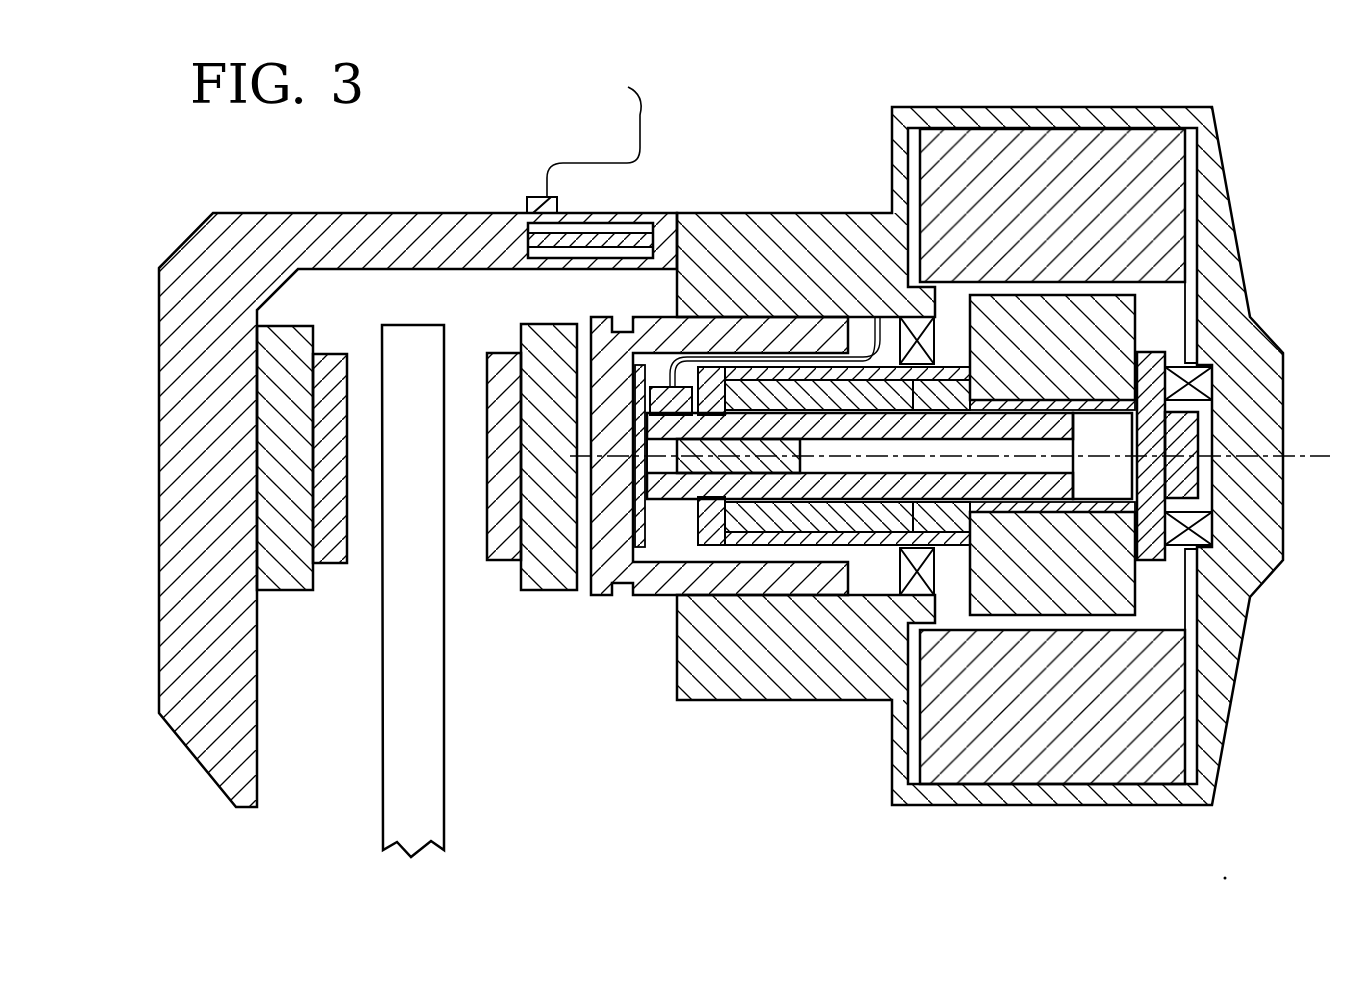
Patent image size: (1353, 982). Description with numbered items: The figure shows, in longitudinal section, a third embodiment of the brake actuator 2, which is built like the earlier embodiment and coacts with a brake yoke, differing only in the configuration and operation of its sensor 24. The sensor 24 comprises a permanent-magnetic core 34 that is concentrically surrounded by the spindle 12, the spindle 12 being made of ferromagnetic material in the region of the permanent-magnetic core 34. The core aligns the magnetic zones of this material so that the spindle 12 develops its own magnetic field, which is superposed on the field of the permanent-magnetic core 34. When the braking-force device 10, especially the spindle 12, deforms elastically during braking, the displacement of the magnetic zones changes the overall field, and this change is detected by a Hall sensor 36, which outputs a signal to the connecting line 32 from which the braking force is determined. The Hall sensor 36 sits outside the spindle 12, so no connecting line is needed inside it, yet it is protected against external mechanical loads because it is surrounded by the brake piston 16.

The brake actuator 2 is at (1222, 680).
The braking-force device 10 is at (928, 427).
The spindle 12 is at (822, 482).
The brake piston 16 is at (605, 345).
The sensor 24 is at (648, 224).
The connecting line 32 is at (640, 130).
The permanent-magnetic core 34 is at (542, 243).
The Hall sensor 36 is at (527, 198).